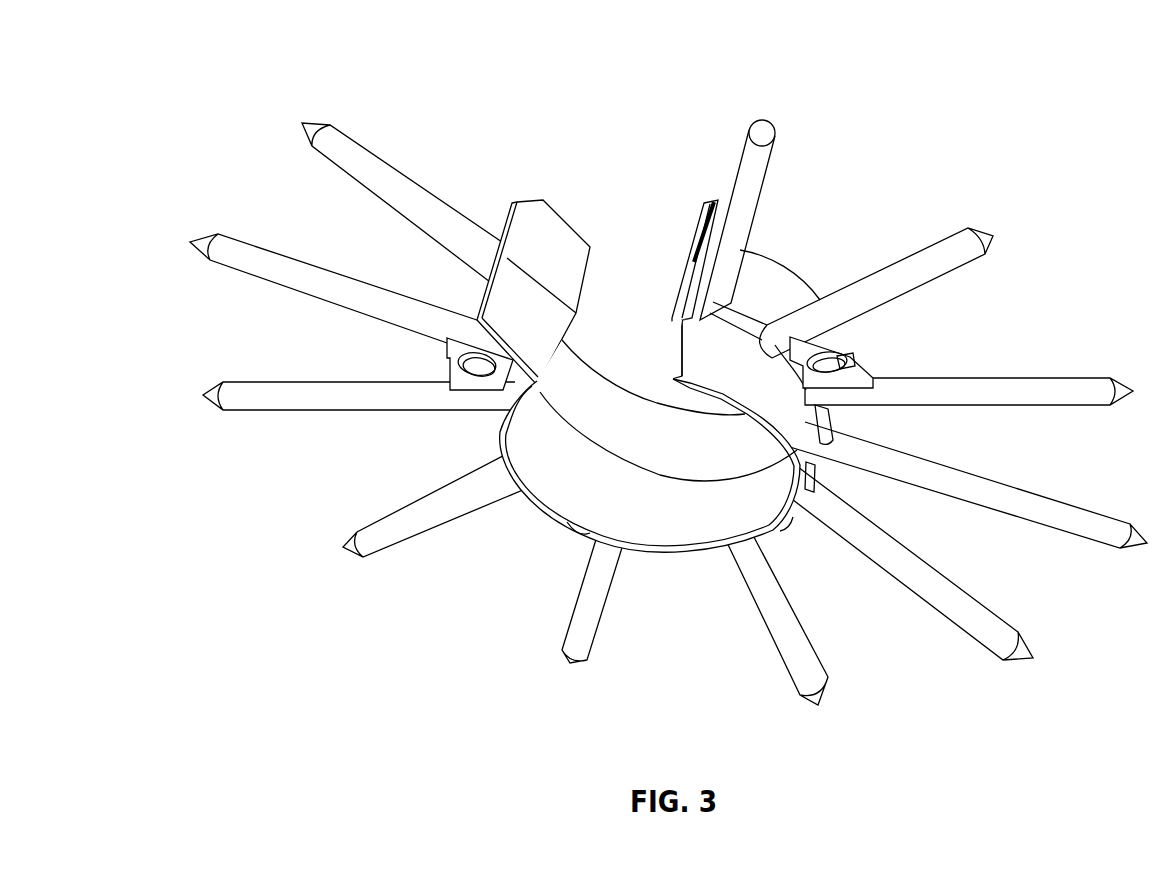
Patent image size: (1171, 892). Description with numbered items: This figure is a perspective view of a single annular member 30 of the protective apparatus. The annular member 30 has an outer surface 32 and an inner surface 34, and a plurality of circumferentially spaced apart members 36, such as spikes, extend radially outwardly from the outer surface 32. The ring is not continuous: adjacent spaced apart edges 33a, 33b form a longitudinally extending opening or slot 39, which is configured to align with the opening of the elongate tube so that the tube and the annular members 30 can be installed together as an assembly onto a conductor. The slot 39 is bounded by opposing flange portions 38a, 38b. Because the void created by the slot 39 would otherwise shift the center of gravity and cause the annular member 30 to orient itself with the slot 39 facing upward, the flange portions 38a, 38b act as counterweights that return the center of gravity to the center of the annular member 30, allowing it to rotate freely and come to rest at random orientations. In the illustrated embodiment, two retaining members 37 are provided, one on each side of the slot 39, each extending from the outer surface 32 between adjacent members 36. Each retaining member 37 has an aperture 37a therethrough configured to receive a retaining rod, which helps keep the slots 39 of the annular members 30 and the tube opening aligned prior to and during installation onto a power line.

The annular member 30 is at (897, 99).
The outer surface 32 is at (766, 292).
The edge 33a is at (505, 229).
The edge 33b is at (692, 263).
The inner surface 34 is at (574, 483).
The members 36 is at (290, 253).
The retaining member 37 is at (447, 347).
The aperture 37a is at (476, 382).
The flange portion 38a is at (527, 263).
The flange portion 38b is at (662, 268).
The slot 39 is at (613, 206).